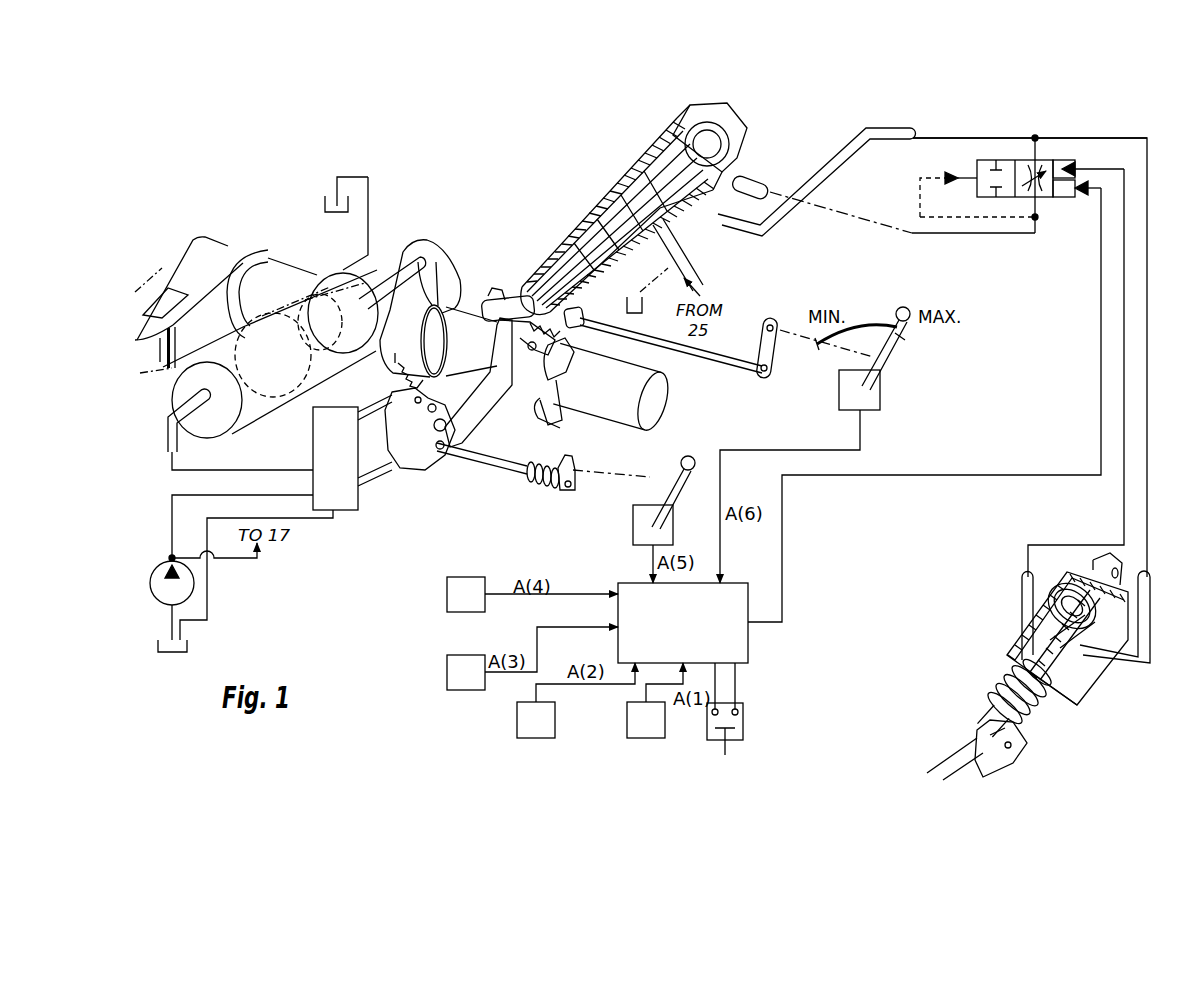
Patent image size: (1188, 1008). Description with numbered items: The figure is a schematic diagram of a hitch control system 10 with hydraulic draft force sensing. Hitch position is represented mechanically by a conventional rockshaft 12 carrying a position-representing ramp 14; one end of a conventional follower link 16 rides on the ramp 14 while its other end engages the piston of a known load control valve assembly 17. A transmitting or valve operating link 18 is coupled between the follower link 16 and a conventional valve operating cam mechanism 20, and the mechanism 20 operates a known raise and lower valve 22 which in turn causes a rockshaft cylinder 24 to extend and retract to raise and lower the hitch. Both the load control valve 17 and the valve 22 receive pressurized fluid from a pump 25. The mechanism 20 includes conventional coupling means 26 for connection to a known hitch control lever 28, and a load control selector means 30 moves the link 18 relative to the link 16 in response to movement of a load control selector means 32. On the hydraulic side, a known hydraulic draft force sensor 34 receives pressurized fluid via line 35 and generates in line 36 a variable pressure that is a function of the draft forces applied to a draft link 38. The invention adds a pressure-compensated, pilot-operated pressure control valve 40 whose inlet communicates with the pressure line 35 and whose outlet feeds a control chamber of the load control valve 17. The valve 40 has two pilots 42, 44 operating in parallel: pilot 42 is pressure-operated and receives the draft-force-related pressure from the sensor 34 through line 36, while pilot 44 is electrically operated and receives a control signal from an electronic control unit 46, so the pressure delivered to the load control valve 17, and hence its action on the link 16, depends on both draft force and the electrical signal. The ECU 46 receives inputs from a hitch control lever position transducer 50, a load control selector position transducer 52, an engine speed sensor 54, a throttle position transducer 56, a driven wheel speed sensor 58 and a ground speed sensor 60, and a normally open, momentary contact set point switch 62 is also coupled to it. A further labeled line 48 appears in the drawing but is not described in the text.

The hitch control system 10 is at (473, 184).
The rockshaft 12 is at (655, 390).
The position-representing ramp 14 is at (560, 366).
The follower link 16 is at (505, 290).
The load control valve assembly 17 is at (601, 186).
The valve operating link 18 is at (490, 410).
The valve operating cam mechanism 20 is at (400, 452).
The raise and lower valve 22 is at (345, 511).
The rockshaft cylinder 24 is at (273, 290).
The pump 25 is at (166, 562).
The coupling means 26 is at (540, 491).
The hitch control lever 28 is at (682, 462).
The load control selector means 30 is at (745, 334).
The load control selector means 32 is at (896, 310).
The hydraulic draft force sensor 34 is at (1003, 641).
The pressure line 35 is at (1095, 138).
The line 36 is at (1020, 598).
The draft link 38 is at (937, 760).
The pressure control valve 40 is at (1050, 205).
The pressure-operated pilot 42 is at (1070, 160).
The electrically operated pilot 44 is at (1065, 199).
The electronic control unit 46 is at (748, 648).
The pilot line 48 is at (880, 222).
The hitch control lever position transducer 50 is at (633, 522).
The load control selector position transducer 52 is at (880, 388).
The engine speed sensor 54 is at (447, 592).
The throttle position transducer 56 is at (447, 672).
The driven wheel speed sensor 58 is at (517, 722).
The ground speed sensor 60 is at (627, 732).
The set point switch 62 is at (743, 722).